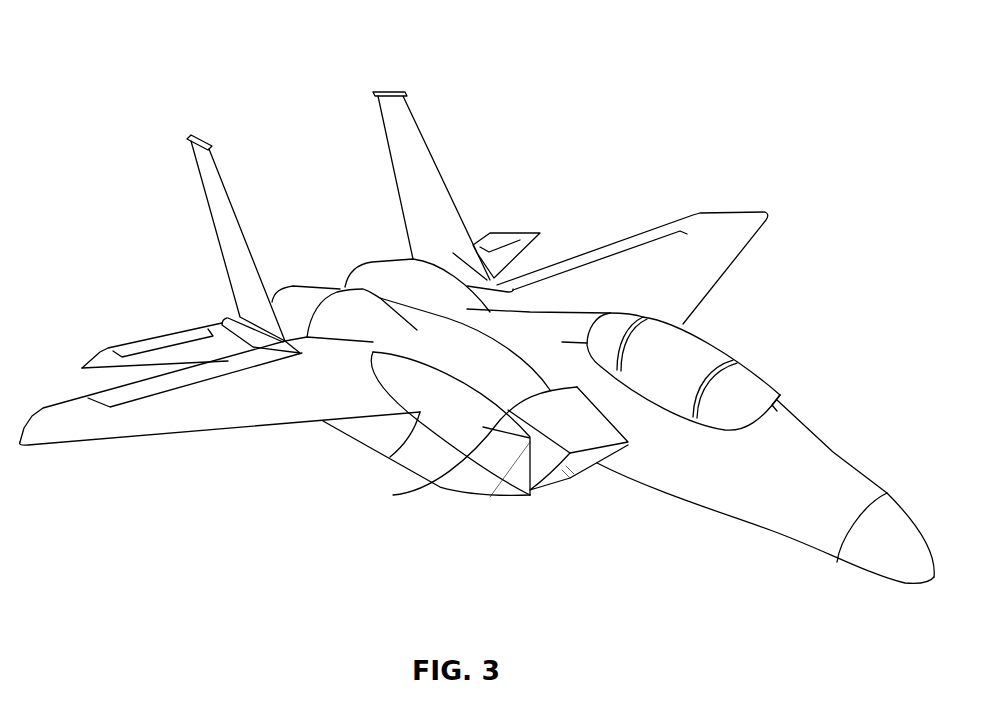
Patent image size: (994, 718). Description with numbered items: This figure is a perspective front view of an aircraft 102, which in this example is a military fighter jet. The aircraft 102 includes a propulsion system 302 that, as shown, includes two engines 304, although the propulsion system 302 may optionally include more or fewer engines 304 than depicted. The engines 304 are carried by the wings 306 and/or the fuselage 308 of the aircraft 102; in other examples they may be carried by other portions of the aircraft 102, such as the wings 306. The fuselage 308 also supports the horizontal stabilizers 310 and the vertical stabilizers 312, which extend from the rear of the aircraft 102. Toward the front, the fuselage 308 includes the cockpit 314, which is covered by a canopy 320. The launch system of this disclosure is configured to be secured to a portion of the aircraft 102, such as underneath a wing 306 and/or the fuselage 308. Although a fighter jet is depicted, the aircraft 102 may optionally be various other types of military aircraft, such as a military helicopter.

The aircraft 102 is at (142, 98).
The propulsion system 302 is at (516, 560).
The engines 304 is at (300, 297).
The wings 306 is at (230, 430).
The fuselage 308 is at (393, 495).
The horizontal stabilizers 310 is at (182, 332).
The vertical stabilizers 312 is at (231, 203).
The cockpit 314 is at (697, 357).
The canopy 320 is at (680, 378).